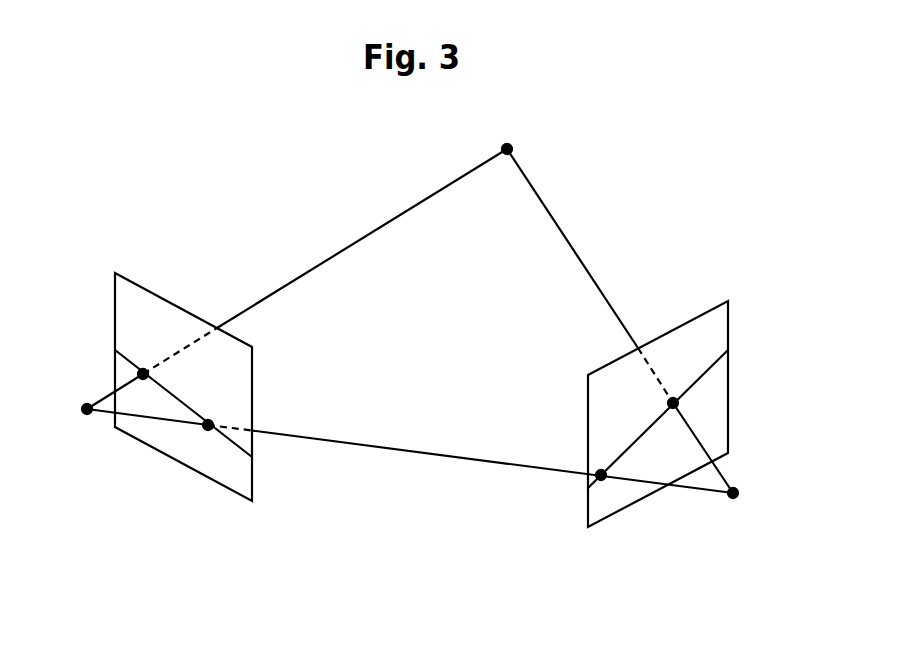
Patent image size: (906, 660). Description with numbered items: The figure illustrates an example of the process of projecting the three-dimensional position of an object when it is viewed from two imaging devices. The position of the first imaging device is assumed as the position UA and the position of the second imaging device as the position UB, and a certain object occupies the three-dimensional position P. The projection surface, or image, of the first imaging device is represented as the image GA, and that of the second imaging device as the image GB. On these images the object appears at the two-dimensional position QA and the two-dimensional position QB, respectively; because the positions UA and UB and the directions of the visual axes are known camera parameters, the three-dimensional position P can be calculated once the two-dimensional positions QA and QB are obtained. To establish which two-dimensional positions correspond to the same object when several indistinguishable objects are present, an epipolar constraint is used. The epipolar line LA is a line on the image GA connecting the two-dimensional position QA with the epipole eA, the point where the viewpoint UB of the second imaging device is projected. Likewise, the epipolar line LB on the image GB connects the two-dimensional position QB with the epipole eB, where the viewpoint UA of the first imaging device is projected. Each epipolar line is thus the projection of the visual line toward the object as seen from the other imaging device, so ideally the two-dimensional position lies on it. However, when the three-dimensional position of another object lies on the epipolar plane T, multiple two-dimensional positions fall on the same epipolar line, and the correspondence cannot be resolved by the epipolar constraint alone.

The 3D position P is at (505, 133).
The epipolar plane T is at (550, 297).
The projection surface of the first imaging device GA is at (115, 305).
The 2D position on image GA QA is at (143, 374).
The position of the first imaging device UA is at (87, 409).
The epipolar line on image GA LA is at (185, 405).
The epipole on image GA eA is at (208, 425).
The projection surface of the second imaging device GB is at (728, 322).
The 2D position on image GB QB is at (673, 403).
The position of the second imaging device UB is at (733, 493).
The epipolar line on image GB LB is at (637, 437).
The epipole on image GB eB is at (601, 475).